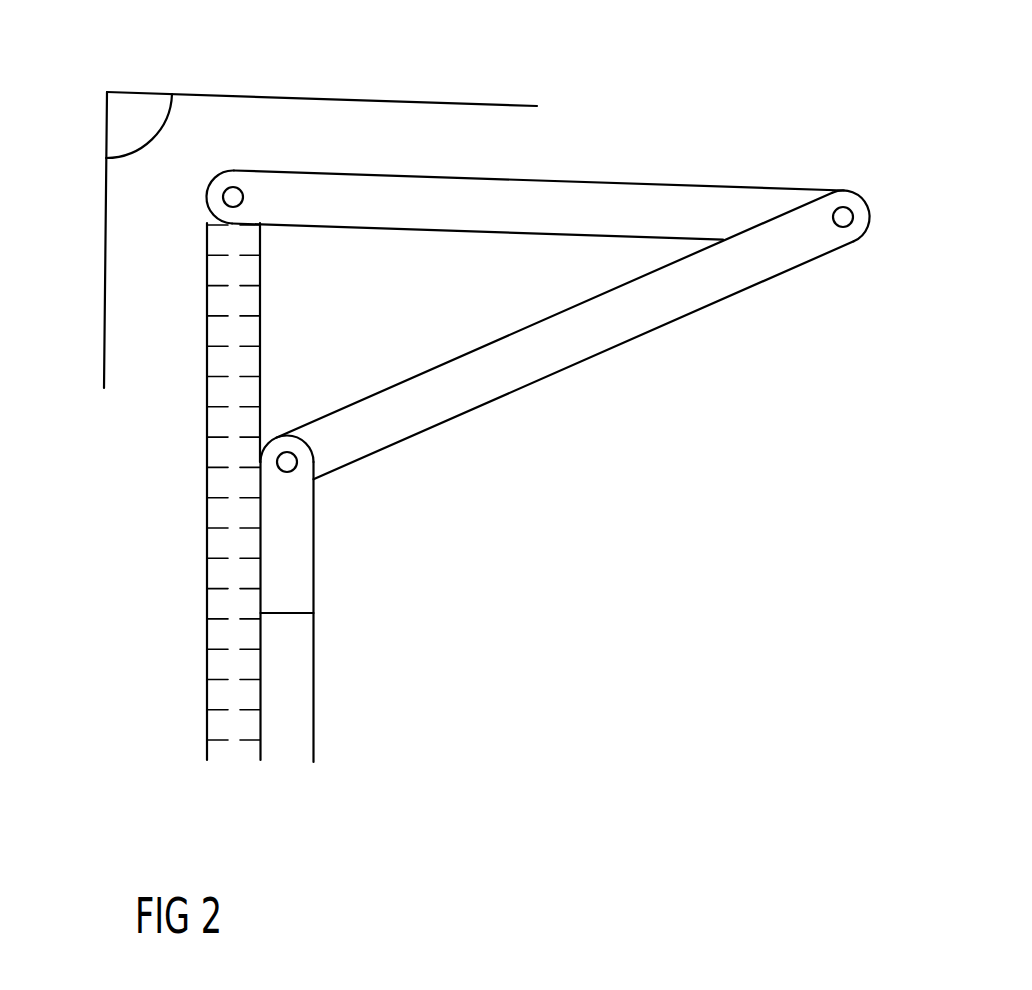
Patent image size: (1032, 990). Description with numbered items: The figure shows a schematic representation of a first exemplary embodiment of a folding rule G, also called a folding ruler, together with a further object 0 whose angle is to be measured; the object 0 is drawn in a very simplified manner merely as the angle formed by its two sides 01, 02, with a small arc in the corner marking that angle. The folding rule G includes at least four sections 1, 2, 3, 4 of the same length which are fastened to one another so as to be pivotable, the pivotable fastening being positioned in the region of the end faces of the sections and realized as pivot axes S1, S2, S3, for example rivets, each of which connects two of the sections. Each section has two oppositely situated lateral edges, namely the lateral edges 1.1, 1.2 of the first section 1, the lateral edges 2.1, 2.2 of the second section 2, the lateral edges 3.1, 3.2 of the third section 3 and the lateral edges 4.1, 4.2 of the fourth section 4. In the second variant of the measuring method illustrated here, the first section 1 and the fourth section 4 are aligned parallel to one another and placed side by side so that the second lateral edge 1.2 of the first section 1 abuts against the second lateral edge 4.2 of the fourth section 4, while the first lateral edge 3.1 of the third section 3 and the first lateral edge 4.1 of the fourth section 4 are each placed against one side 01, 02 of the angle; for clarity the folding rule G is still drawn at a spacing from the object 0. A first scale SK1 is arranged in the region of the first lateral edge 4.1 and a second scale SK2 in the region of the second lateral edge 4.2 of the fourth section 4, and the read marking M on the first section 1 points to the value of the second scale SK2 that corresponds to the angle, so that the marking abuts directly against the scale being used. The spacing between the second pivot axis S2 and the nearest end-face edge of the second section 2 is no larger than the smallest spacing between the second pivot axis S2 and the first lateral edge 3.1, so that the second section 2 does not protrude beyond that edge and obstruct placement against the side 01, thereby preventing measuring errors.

The object 0 is at (319, 229).
The first side of the angle 01 is at (537, 106).
The second side of the angle 02 is at (104, 388).
The folding rule G is at (752, 462).
The first section 1 is at (341, 599).
The first lateral edge of the first section 1.1 is at (313, 592).
The second lateral edge of the first section 1.2 is at (260, 675).
The read marking M is at (312, 613).
The second section 2 is at (572, 334).
The first lateral edge of the second section 2.1 is at (597, 357).
The second lateral edge of the second section 2.2 is at (450, 358).
The third section 3 is at (524, 203).
The first lateral edge of the third section 3.1 is at (653, 180).
The second lateral edge of the third section 3.2 is at (532, 235).
The fourth section 4 is at (234, 537).
The first lateral edge of the fourth section 4.1 is at (207, 450).
The second lateral edge of the fourth section 4.2 is at (262, 420).
The first pivot axis S1 is at (292, 466).
The second pivot axis S2 is at (848, 212).
The third pivot axis S3 is at (243, 200).
The first scale SK1 is at (218, 749).
The second scale SK2 is at (247, 749).